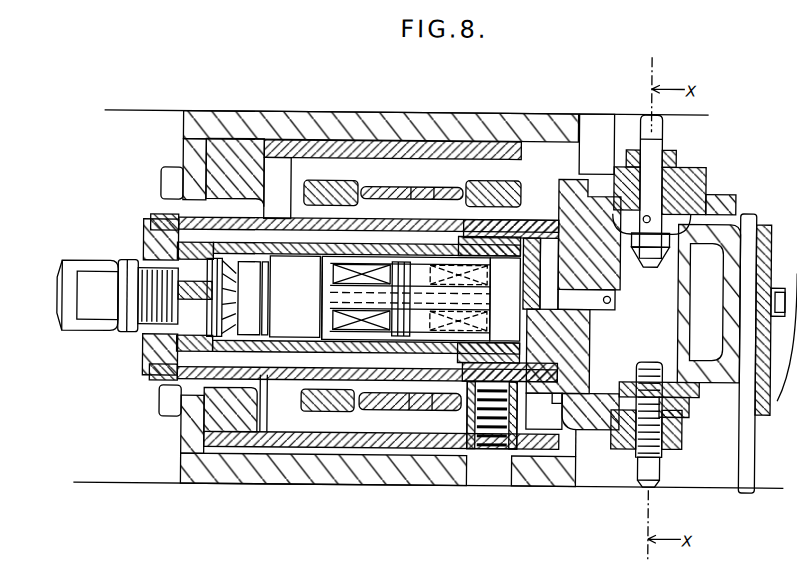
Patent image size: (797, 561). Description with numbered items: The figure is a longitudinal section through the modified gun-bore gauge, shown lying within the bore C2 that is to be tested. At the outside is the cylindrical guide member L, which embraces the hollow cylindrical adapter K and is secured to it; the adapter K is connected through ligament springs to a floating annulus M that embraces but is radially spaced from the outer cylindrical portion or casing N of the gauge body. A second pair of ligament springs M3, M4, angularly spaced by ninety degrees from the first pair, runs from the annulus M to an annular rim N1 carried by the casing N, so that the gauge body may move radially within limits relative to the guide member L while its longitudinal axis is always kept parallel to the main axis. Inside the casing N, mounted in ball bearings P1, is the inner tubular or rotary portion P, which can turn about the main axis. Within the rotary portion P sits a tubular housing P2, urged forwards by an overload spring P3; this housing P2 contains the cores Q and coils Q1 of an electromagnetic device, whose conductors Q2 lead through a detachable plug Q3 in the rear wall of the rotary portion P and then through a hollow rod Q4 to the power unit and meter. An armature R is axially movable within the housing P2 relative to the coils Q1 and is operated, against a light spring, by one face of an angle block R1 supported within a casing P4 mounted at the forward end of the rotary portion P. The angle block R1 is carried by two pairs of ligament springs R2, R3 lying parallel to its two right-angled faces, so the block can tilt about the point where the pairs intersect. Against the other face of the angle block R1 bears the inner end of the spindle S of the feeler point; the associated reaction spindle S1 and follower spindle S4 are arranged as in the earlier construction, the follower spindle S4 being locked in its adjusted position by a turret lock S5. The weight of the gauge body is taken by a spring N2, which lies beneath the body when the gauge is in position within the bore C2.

The bore C2 is at (155, 112).
The cylindrical guide member L is at (515, 128).
The hollow cylindrical adapter K is at (458, 152).
The outer cylindrical portion of the gauge body N is at (290, 158).
The floating annulus M is at (335, 181).
The ligament spring M3 is at (397, 194).
The ligament spring M4 is at (436, 400).
The inner tubular or rotary portion P is at (279, 329).
The ball bearings P1 is at (150, 223).
The tubular housing P2 is at (384, 330).
The overload spring P3 is at (157, 377).
The casing P4 is at (610, 170).
The cores Q is at (358, 262).
The coils Q1 is at (368, 297).
The conductors Q2 is at (138, 343).
The detachable plug Q3 is at (127, 322).
The hollow rod Q4 is at (60, 300).
The annular rim N1 is at (513, 218).
The spring N2 is at (510, 413).
The armature R is at (556, 302).
The angle block R1 is at (608, 268).
The ligament springs R2 is at (632, 206).
The ligament springs R3 is at (640, 257).
The spindle of the feeler point S is at (643, 168).
The reaction spindle S1 is at (660, 452).
The follower spindle S4 is at (747, 453).
The turret lock S5 is at (782, 388).